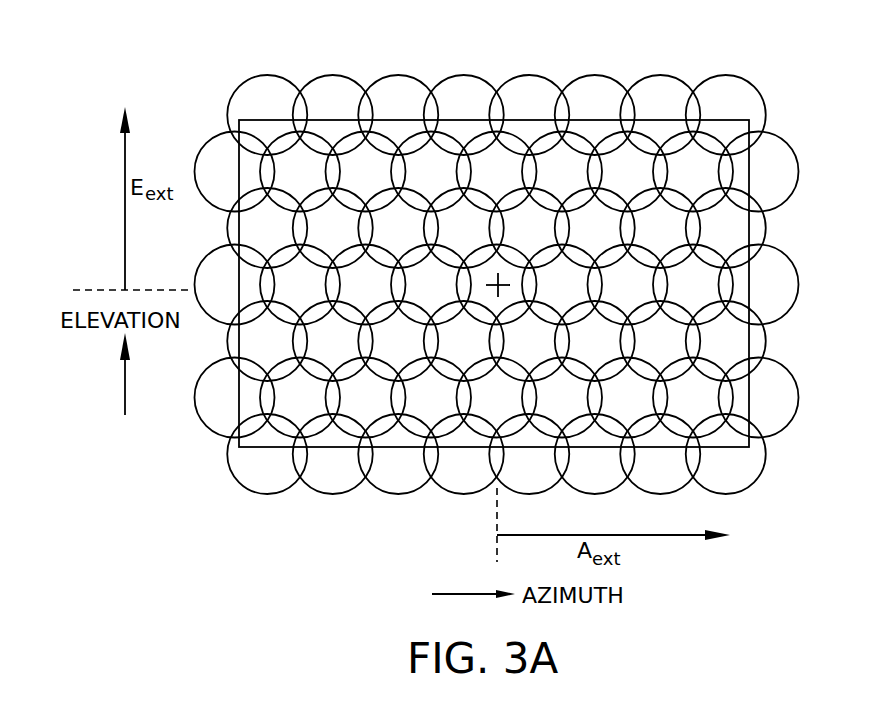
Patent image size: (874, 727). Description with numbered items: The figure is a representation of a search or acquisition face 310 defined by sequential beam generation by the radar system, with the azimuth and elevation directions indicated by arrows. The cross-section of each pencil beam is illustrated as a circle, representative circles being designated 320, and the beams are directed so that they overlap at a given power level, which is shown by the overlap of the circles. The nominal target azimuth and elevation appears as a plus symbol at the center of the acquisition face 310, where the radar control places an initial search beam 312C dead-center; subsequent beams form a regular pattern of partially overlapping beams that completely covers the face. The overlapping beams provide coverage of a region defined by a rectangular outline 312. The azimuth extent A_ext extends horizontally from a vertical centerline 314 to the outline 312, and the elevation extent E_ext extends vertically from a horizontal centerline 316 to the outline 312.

The search or acquisition face 310 is at (522, 288).
The rectangular outline 312 is at (525, 120).
The initial search beam 312C is at (537, 287).
The vertical centerline 314 is at (493, 500).
The horizontal centerline 316 is at (102, 290).
The pencil beam cross-section circles 320 is at (268, 75).